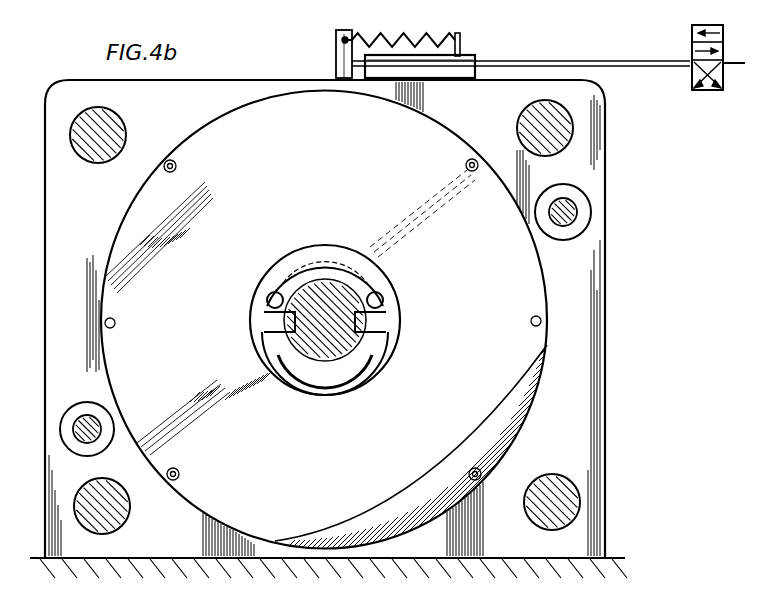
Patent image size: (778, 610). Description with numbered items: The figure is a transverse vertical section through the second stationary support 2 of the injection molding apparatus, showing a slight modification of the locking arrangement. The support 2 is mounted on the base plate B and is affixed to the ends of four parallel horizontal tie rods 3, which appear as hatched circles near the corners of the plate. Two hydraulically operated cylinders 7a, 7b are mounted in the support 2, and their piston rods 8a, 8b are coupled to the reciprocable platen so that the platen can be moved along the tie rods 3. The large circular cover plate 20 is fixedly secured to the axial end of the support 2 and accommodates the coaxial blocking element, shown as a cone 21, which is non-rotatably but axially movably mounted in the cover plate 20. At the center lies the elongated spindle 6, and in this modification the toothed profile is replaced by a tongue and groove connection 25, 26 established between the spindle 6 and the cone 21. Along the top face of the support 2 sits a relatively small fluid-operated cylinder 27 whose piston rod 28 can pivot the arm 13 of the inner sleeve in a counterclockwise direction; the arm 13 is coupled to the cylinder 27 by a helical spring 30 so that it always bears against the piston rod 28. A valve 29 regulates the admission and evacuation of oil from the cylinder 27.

The second stationary support 2 is at (570, 288).
The tie rods 3 is at (115, 135).
The spindle 6 is at (312, 355).
The hydraulically operated cylinder 7a is at (585, 202).
The piston rod 8a is at (575, 214).
The hydraulically operated cylinder 7b is at (76, 410).
The piston rod 8b is at (74, 430).
The arm 13 is at (335, 57).
The cover plate 20 is at (123, 218).
The cone 21 is at (287, 262).
The tongue and groove connection 25 is at (288, 322).
The tongue and groove connection 26 is at (273, 297).
The fluid-operated cylinder 27 is at (470, 60).
The piston rod 28 is at (351, 80).
The valve 29 is at (692, 42).
The helical spring 30 is at (440, 35).
The base plate B is at (170, 565).